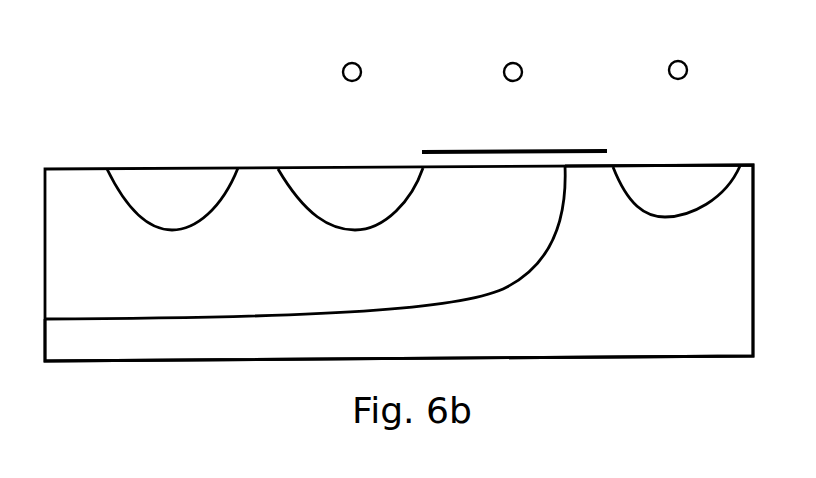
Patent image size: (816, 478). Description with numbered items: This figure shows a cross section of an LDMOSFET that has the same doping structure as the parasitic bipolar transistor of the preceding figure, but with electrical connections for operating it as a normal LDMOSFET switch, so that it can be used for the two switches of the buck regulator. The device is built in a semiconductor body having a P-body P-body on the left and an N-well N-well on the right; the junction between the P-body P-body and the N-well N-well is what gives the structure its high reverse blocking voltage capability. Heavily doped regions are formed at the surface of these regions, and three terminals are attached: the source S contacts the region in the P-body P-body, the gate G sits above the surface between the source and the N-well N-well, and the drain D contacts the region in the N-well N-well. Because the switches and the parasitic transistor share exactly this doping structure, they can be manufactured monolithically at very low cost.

The source S is at (352, 169).
The gate G is at (513, 151).
The drain D is at (678, 166).
The element P-body is at (305, 242).
The element N-well is at (399, 263).